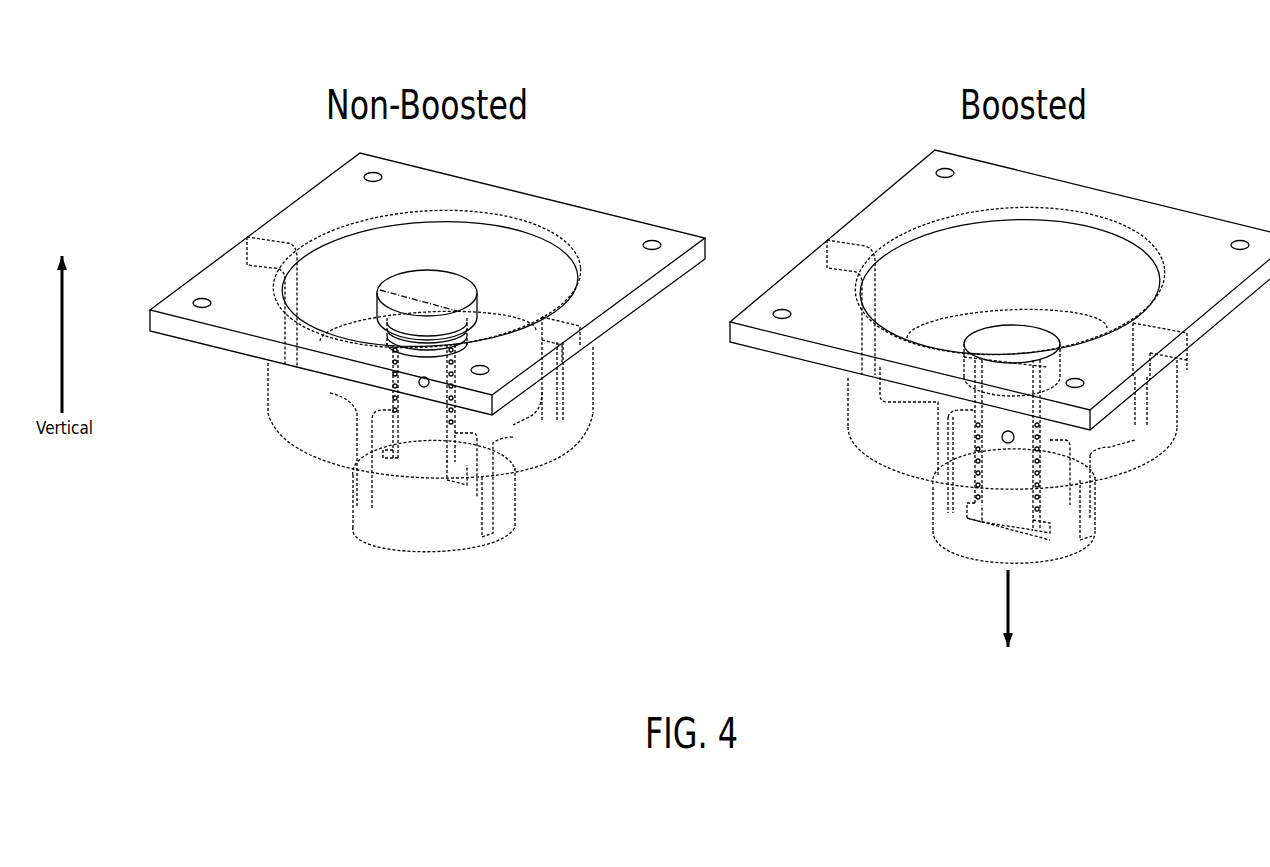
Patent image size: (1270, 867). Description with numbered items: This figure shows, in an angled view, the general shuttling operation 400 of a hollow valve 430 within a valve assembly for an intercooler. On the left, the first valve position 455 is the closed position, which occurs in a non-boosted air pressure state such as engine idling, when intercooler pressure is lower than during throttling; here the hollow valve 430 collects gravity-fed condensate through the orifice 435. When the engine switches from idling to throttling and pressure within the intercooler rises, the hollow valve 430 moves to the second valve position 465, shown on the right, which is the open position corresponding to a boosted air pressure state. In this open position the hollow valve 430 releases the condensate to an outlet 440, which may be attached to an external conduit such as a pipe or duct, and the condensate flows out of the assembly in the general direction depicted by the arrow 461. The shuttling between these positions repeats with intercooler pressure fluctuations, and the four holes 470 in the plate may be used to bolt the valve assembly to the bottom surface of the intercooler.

The shuttling operation 400 is at (1191, 49).
The first valve position 455 is at (237, 197).
The hollow valve 430 is at (433, 268).
The orifice 435 is at (425, 395).
The second valve position 465 is at (853, 184).
The holes 470 is at (782, 324).
The outlet 440 is at (1107, 507).
The arrow 461 is at (1034, 608).